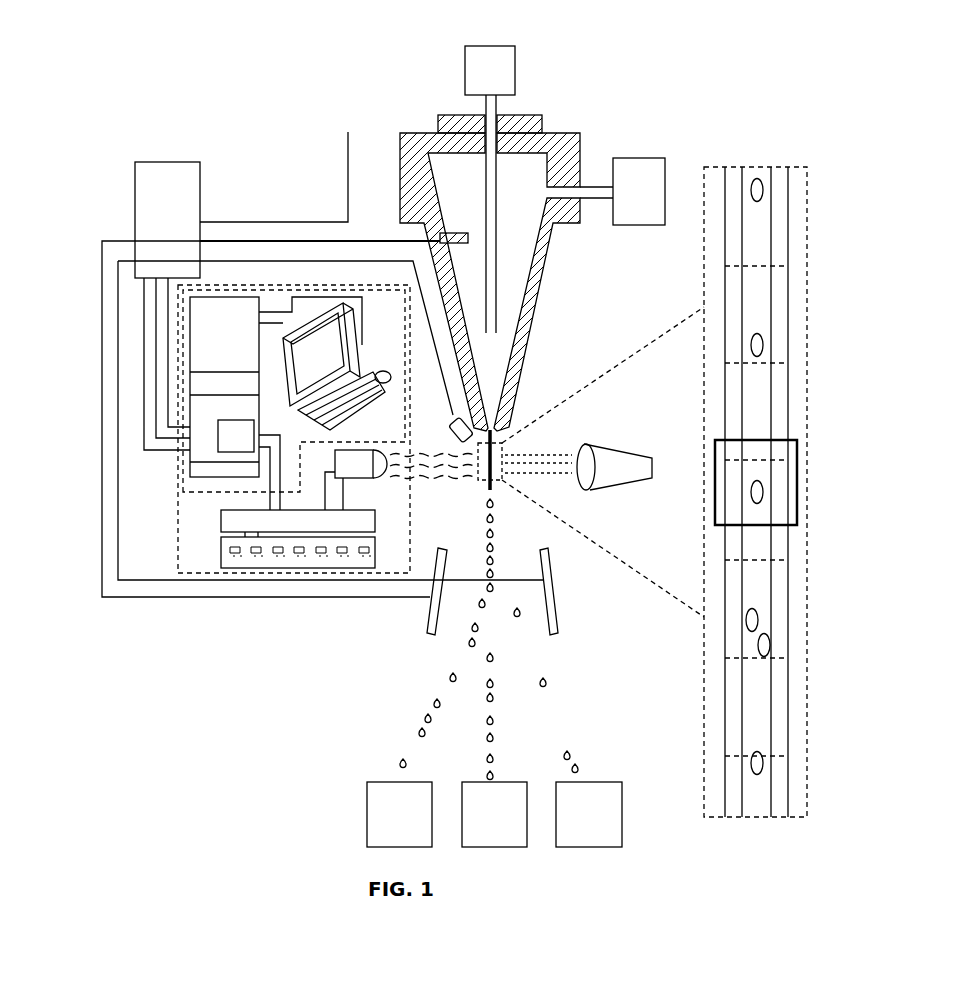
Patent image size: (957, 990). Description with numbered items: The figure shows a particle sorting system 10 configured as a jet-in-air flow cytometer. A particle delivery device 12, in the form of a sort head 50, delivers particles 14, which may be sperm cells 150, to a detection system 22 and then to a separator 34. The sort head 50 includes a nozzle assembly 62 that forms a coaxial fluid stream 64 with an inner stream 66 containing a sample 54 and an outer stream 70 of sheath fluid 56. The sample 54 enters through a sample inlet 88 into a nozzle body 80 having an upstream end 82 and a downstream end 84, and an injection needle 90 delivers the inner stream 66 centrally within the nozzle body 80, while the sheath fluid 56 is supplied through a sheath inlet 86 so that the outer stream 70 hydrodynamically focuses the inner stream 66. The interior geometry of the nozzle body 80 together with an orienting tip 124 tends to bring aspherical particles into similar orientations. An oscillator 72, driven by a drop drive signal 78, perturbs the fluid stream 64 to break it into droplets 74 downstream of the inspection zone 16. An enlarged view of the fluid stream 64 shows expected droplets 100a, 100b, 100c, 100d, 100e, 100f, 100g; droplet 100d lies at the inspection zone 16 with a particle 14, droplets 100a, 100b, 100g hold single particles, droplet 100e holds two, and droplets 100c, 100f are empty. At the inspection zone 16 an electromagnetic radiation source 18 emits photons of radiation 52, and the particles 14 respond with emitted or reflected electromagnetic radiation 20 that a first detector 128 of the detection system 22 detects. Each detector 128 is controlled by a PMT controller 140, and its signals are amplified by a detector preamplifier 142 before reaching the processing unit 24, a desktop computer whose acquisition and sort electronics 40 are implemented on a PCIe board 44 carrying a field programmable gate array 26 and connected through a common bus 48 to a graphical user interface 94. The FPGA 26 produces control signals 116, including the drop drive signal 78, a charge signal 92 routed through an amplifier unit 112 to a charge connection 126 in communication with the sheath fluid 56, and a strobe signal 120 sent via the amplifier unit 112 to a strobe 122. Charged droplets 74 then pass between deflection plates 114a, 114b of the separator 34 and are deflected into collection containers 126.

The particle sorting system 10 is at (254, 53).
The particle delivery device 12 is at (594, 101).
The sort head 50 is at (404, 268).
The particles 14 is at (758, 192).
The sperm cells 150 is at (750, 473).
The inspection zone 16 is at (715, 460).
The electromagnetic radiation source 18 is at (608, 475).
The emitted or reflected electromagnetic radiation 20 is at (445, 453).
The detection system 22 is at (294, 429).
The processing unit 24 is at (295, 391).
The field programmable gate array 26 is at (236, 447).
The separator 34 is at (410, 610).
The acquisition and sort electronics 40 is at (243, 387).
The PCIe board 44 is at (243, 387).
The common bus 48 is at (243, 403).
The photons of radiation 52 is at (543, 455).
The sample 54 is at (753, 255).
The sheath fluid 56 is at (733, 217).
The nozzle assembly 62 is at (556, 268).
The fluid stream 64 is at (724, 192).
The inner stream 66 is at (753, 230).
The outer stream 70 is at (730, 412).
The oscillator 72 is at (447, 167).
The droplets 74 is at (488, 518).
The drop drive signal 78 is at (278, 222).
The nozzle body 80 is at (553, 300).
The upstream end 82 is at (438, 128).
The downstream end 84 is at (493, 353).
The sheath inlet 86 is at (580, 193).
The sample inlet 88 is at (495, 147).
The injection needle 90 is at (445, 160).
The charge signal 92 is at (308, 240).
The graphical user interface 94 is at (337, 358).
The expected droplet 100a is at (788, 200).
The expected droplet 100b is at (788, 290).
The expected droplet 100c is at (788, 398).
The expected droplet 100d is at (797, 493).
The expected droplet 100e is at (788, 600).
The expected droplet 100f is at (788, 703).
The expected droplet 100g is at (788, 797).
The amplifier unit 112 is at (167, 220).
The deflection plate 114a is at (428, 620).
The deflection plate 114b is at (557, 621).
The control signals 116 is at (168, 303).
The strobe signal 120 is at (222, 260).
The strobe 122 is at (490, 427).
The orienting tip 124 is at (503, 433).
The charge connection 126 is at (478, 195).
The first detector 128 is at (347, 463).
The PMT controller 140 is at (223, 557).
The detector preamplifier 142 is at (221, 522).